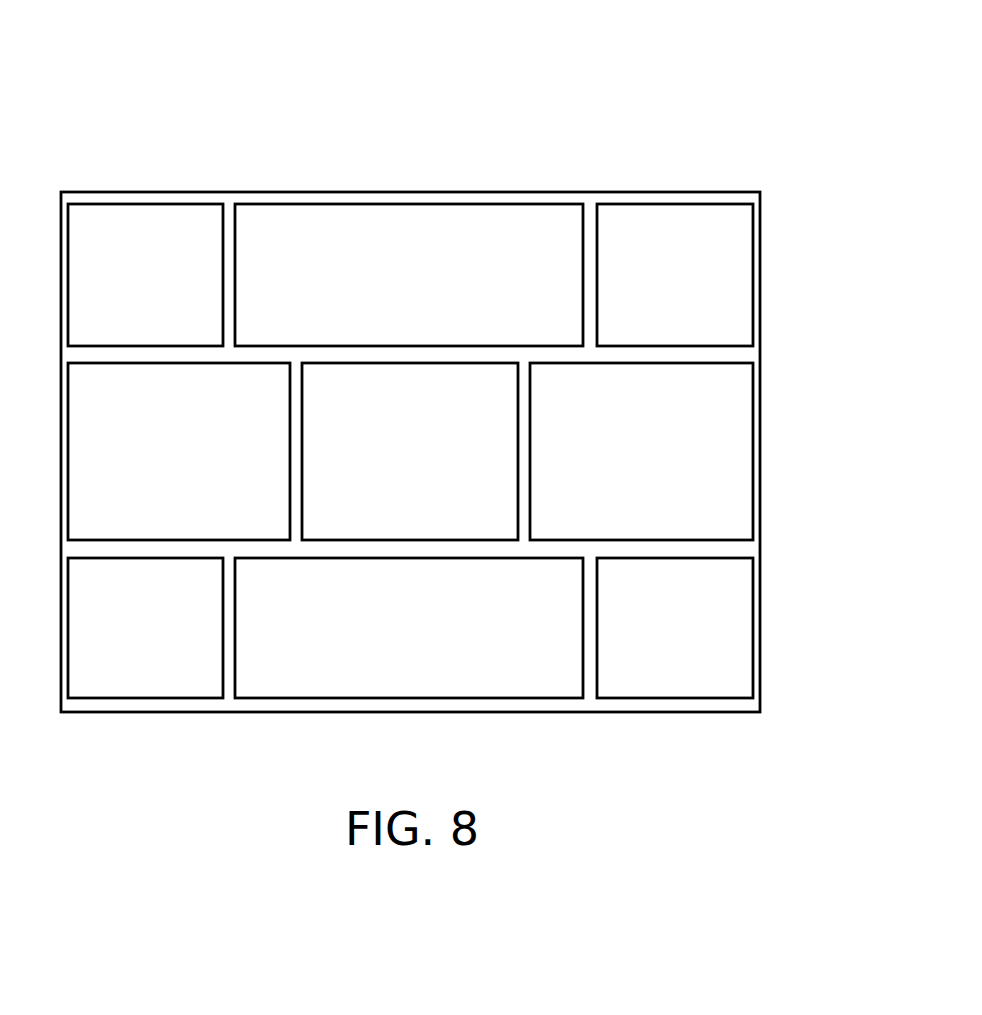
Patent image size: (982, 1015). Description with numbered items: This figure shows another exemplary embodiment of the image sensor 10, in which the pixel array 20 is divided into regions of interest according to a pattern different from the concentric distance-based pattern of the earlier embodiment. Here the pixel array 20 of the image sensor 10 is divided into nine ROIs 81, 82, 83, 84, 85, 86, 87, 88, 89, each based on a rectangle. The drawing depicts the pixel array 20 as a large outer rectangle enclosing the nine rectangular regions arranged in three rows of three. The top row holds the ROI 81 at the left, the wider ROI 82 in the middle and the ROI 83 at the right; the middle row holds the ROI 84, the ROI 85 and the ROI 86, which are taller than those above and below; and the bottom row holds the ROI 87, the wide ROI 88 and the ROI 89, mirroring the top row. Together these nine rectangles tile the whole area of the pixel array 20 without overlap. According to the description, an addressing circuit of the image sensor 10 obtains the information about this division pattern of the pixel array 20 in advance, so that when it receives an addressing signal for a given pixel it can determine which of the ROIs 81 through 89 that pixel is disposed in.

The image sensor 10 is at (788, 45).
The pixel array 20 is at (777, 244).
The ROI 81 is at (128, 292).
The ROI 82 is at (392, 292).
The ROI 83 is at (657, 292).
The ROI 84 is at (162, 467).
The ROI 85 is at (392, 467).
The ROI 86 is at (622, 467).
The ROI 87 is at (128, 645).
The ROI 88 is at (392, 645).
The ROI 89 is at (656, 645).